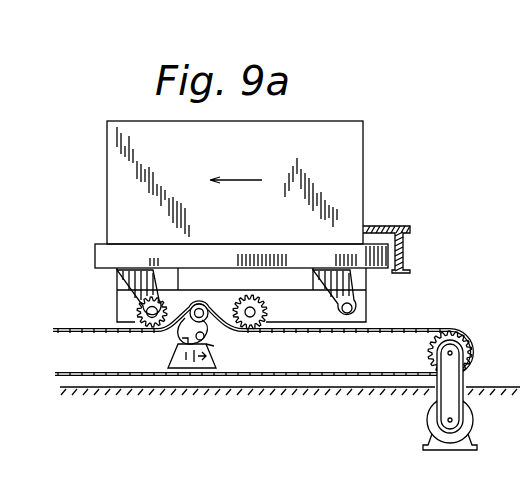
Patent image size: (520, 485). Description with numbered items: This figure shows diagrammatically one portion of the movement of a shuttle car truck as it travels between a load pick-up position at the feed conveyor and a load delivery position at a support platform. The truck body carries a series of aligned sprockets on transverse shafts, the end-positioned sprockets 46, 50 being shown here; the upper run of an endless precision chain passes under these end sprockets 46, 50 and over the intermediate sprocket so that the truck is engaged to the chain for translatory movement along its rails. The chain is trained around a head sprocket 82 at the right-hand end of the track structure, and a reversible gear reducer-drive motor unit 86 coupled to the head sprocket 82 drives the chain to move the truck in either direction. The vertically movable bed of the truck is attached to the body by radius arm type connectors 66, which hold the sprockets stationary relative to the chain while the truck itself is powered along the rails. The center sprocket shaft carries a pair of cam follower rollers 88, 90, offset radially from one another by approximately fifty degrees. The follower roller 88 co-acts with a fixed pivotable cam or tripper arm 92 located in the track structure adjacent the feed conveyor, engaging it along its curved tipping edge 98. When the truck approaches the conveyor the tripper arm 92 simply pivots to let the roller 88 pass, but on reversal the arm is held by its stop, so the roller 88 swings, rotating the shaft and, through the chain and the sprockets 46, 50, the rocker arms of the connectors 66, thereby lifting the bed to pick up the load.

The sprocket 46 is at (137, 303).
The sprocket 50 is at (266, 300).
The radius arm type connector 66 is at (117, 275).
The head sprocket 82 is at (433, 343).
The gear reducer-drive motor unit 86 is at (443, 420).
The cam follower roller 88 is at (214, 346).
The cam follower roller 90 is at (190, 327).
The cam or tripper arm 92 is at (188, 377).
The curved tipping edge 98 is at (185, 343).